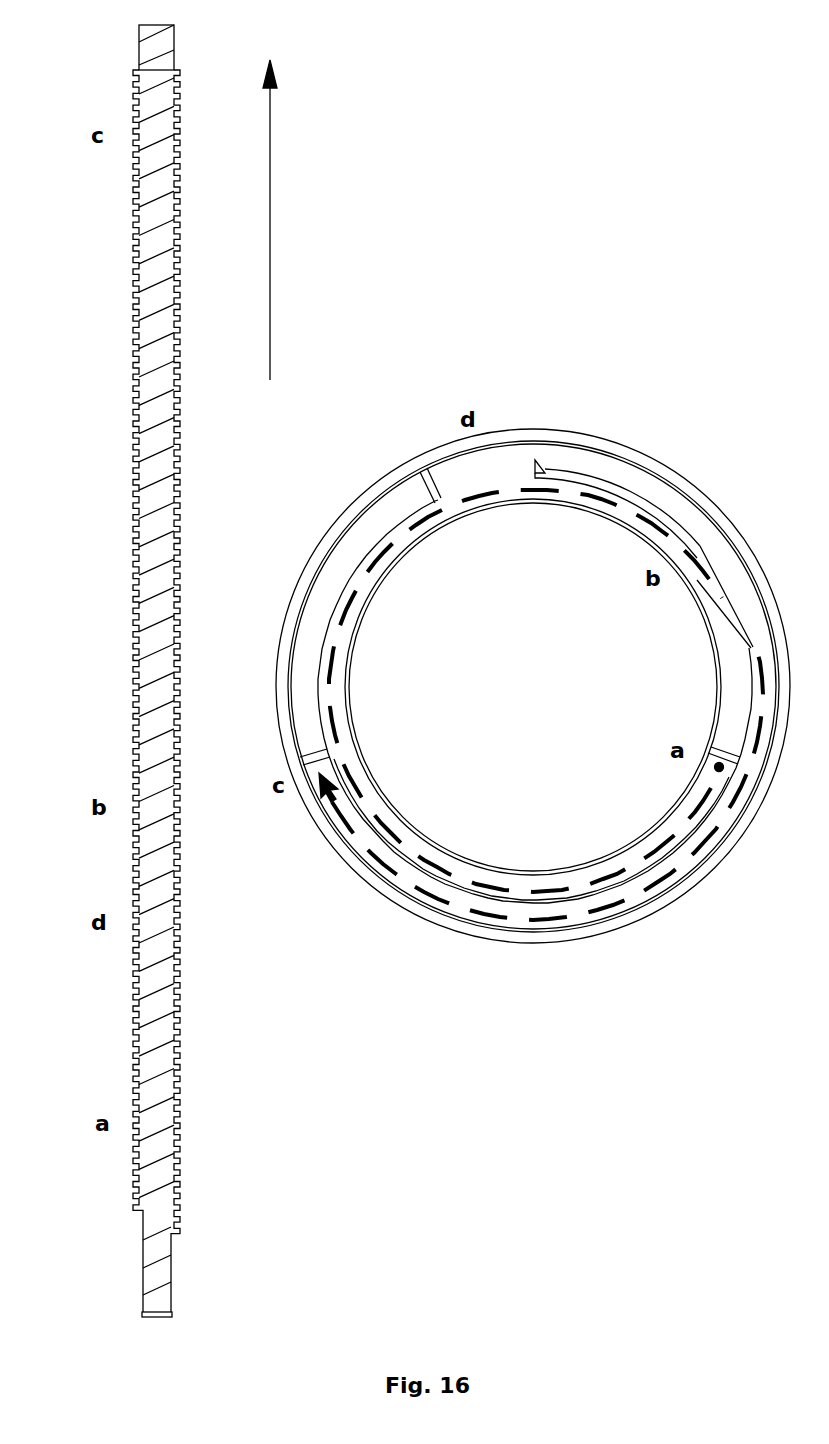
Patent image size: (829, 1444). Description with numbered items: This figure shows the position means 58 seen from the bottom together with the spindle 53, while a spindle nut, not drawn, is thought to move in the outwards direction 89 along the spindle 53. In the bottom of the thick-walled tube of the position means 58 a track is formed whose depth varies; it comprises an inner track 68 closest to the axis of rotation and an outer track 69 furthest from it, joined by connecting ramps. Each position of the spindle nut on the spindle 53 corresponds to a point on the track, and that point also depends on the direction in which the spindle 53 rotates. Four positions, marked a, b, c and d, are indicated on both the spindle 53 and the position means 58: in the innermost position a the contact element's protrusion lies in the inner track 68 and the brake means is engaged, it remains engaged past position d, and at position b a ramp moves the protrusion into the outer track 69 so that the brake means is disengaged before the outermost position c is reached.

The spindle 53 is at (150, 350).
The outwards direction 89 is at (270, 250).
The position means 58 is at (662, 974).
The outer track 69 is at (610, 468).
The inner track 68 is at (571, 491).